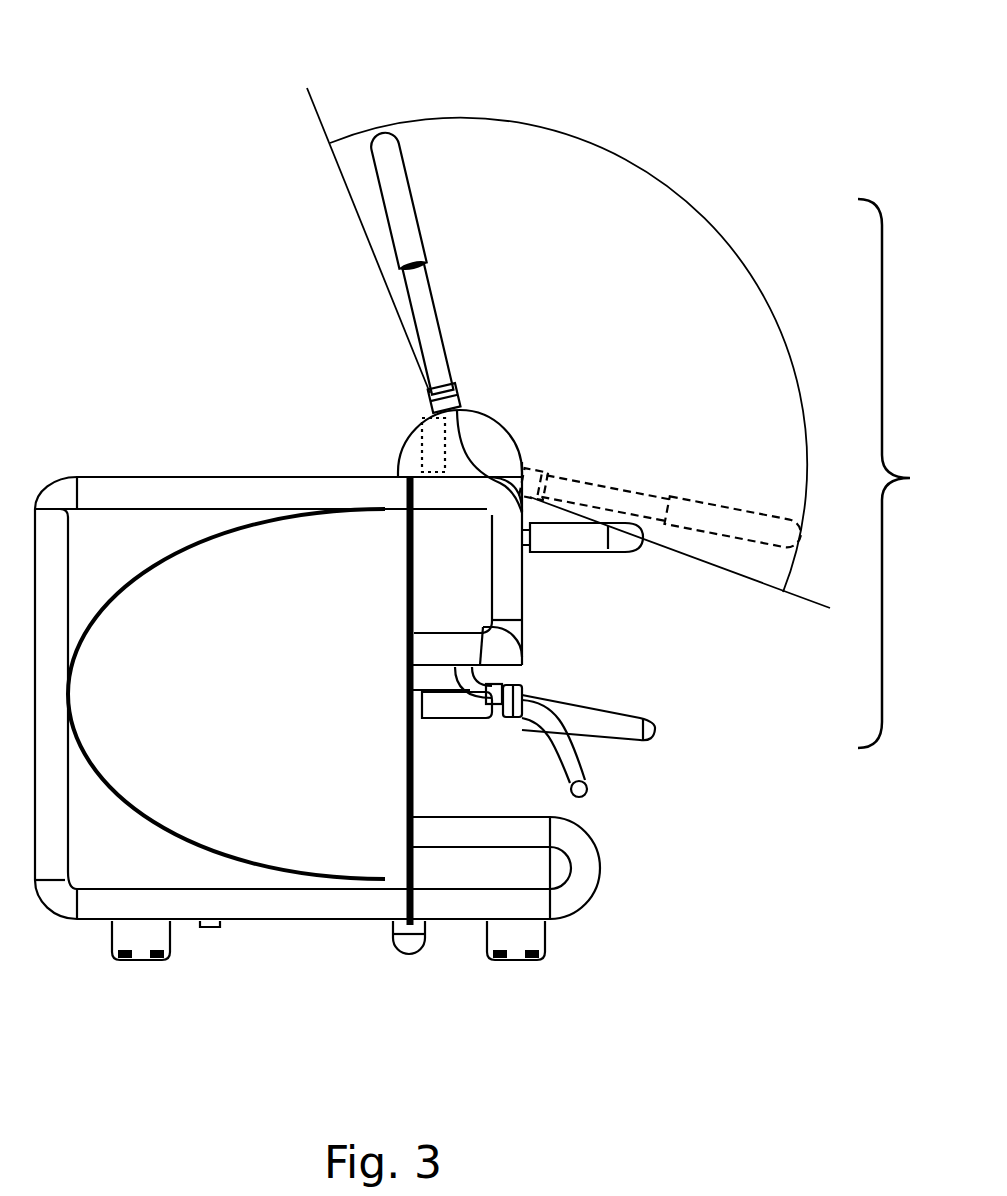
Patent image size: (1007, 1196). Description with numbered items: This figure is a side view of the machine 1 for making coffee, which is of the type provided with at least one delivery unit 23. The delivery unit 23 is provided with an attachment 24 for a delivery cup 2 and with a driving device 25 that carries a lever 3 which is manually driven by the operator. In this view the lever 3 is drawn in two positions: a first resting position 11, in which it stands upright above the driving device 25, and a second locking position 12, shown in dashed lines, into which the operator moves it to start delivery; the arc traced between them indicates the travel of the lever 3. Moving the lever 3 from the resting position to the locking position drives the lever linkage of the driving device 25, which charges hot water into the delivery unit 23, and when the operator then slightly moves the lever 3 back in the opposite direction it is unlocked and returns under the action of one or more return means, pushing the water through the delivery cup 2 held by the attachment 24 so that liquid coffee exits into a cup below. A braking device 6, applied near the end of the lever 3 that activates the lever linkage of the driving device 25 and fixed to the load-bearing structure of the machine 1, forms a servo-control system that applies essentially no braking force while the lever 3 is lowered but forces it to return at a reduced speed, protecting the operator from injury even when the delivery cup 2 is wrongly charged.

The machine 1 is at (75, 478).
The delivery cup 2 is at (456, 722).
The lever 3 is at (412, 312).
The braking device 6 is at (424, 438).
The raised lever position 11 is at (380, 86).
The lowered lever position 12 is at (773, 498).
The delivery unit 23 is at (630, 442).
The attachment 24 is at (495, 667).
The driving device 25 is at (514, 426).